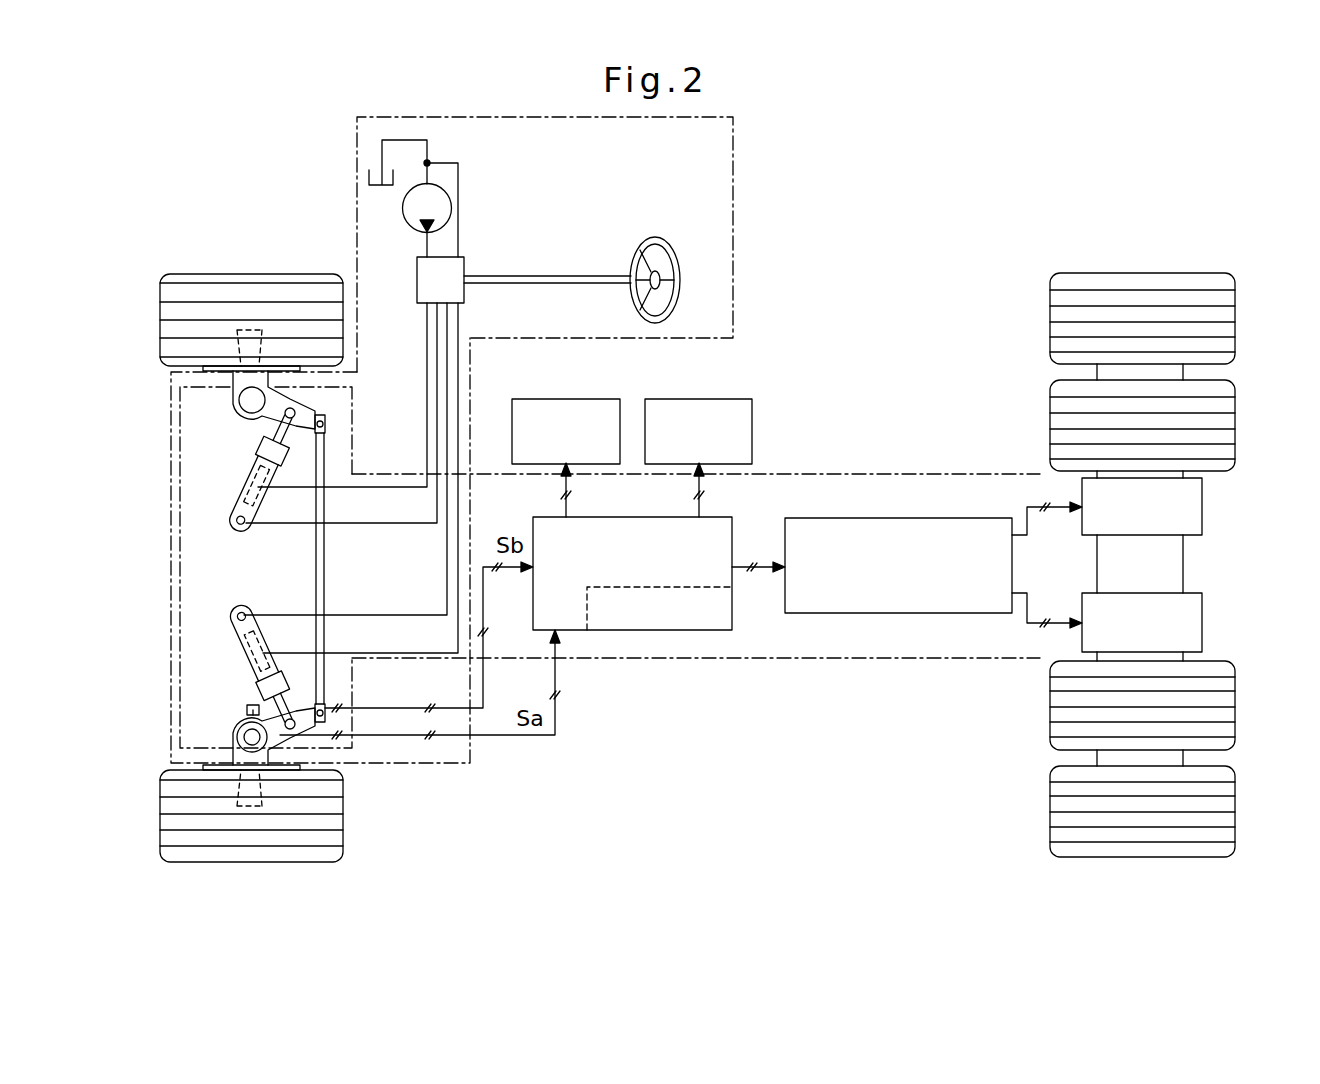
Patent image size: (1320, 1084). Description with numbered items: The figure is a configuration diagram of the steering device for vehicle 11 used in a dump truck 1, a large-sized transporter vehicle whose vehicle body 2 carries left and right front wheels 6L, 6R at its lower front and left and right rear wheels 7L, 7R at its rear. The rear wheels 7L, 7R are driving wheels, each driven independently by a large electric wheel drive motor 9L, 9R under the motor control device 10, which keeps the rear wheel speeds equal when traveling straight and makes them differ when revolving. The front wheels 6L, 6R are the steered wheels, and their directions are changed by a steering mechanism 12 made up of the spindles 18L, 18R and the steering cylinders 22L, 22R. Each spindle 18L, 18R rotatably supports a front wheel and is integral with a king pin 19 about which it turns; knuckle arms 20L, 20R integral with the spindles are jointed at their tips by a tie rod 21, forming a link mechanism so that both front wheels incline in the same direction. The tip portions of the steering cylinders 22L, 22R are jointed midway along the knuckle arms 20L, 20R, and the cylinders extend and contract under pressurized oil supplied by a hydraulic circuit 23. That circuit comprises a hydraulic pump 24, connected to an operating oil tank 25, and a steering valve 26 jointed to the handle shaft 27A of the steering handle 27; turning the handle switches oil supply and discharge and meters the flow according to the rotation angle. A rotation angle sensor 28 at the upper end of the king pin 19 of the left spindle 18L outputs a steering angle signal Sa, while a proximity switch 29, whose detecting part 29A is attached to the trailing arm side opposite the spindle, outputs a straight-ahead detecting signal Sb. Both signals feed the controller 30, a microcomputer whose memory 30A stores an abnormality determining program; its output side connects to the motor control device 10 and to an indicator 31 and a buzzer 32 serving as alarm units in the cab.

The dump truck 1 is at (842, 368).
The vehicle body 2 is at (915, 466).
The front wheel 6R is at (258, 283).
The front wheel 6L is at (251, 853).
The rear wheel 7R is at (1213, 313).
The rear wheel 7L is at (1213, 712).
The wheel drive motor 9R is at (1202, 507).
The wheel drive motor 9L is at (1202, 623).
The motor control device 10 is at (898, 615).
The steering device for vehicle 11 is at (458, 772).
The steering mechanism 12 is at (202, 560).
The spindle 18R is at (243, 381).
The spindle 18L is at (238, 753).
The king pin 19 is at (245, 406).
The knuckle arm 20R is at (328, 411).
The knuckle arm 20L is at (284, 745).
The tie rod 21 is at (326, 575).
The steering cylinder 22R is at (237, 517).
The steering cylinder 22L is at (237, 618).
The hydraulic circuit 23 is at (488, 385).
The hydraulic pump 24 is at (412, 219).
The operating oil tank 25 is at (369, 180).
The steering valve 26 is at (460, 268).
The steering handle 27 is at (663, 256).
The handle shaft 27A is at (579, 273).
The rotation angle sensor 28 is at (242, 734).
The proximity switch 29 is at (243, 690).
The detecting part 29A is at (247, 709).
The controller 30 is at (656, 592).
The memory 30A is at (703, 633).
The indicator 31 is at (576, 398).
The buzzer 32 is at (703, 398).